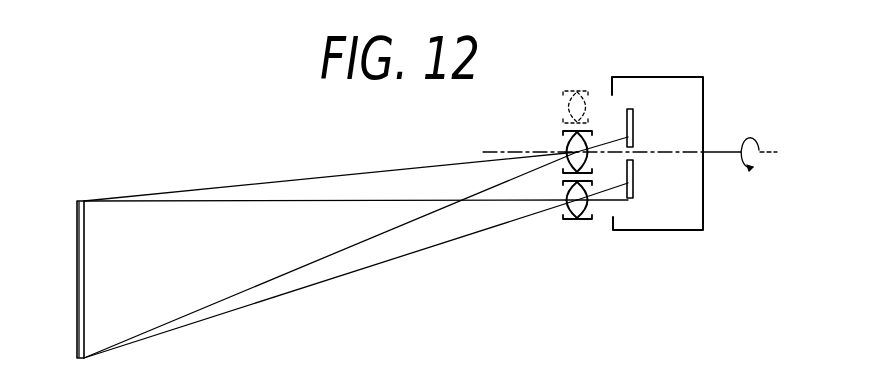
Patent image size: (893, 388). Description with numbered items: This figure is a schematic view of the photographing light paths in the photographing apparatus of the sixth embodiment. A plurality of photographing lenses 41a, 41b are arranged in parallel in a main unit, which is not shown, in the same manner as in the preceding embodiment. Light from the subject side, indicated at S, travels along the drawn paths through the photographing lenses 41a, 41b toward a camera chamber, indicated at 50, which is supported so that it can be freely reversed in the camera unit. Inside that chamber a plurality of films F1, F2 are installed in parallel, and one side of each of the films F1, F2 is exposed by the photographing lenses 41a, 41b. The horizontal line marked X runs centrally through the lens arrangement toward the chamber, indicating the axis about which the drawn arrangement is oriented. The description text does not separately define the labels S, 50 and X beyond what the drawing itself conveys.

The object surface / screen S is at (78, 302).
The photographing lens 41a is at (567, 148).
The photographing lens 41b is at (594, 221).
The film F1 is at (632, 125).
The film F2 is at (633, 197).
The housing 50 is at (704, 88).
The optical axis X is at (640, 154).